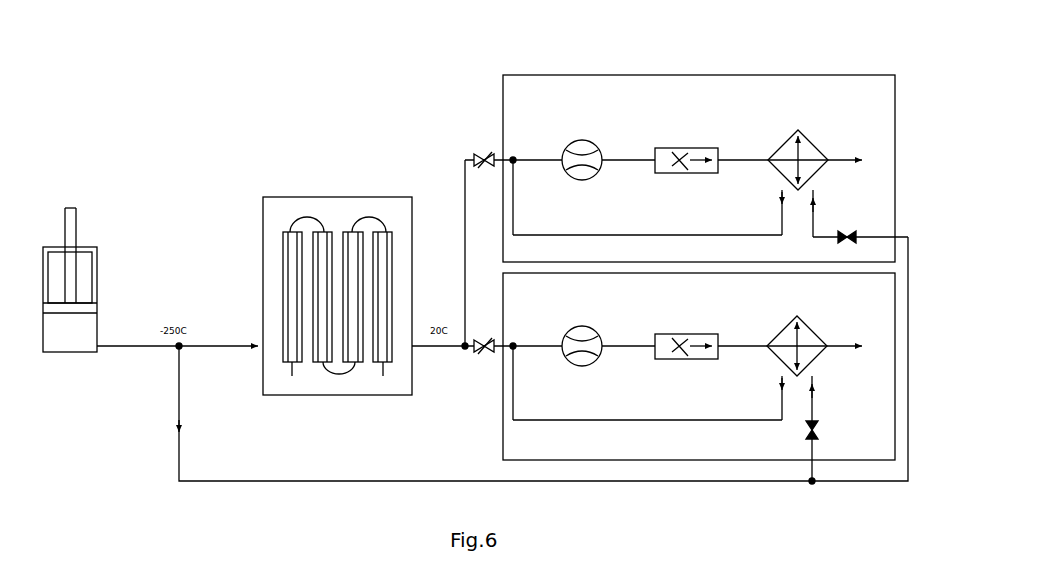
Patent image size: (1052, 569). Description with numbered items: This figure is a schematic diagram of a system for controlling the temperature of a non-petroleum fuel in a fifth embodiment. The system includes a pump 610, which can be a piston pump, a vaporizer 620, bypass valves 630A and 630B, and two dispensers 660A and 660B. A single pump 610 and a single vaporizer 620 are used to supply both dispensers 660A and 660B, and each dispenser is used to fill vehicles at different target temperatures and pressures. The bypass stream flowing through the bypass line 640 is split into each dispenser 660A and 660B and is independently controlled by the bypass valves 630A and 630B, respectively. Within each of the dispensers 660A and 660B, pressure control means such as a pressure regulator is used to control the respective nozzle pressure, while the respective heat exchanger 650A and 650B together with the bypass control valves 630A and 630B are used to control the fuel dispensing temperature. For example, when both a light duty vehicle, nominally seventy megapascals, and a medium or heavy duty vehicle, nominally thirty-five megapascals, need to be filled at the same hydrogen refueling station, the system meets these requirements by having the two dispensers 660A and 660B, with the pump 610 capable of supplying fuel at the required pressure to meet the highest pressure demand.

The pump 610 is at (82, 247).
The vaporizer 620 is at (290, 197).
The bypass valve 630A is at (860, 235).
The bypass valve 630B is at (818, 441).
The bypass line 640 is at (323, 487).
The heat exchanger 650A is at (778, 148).
The heat exchanger 650B is at (778, 334).
The dispenser 660A is at (729, 140).
The dispenser 660B is at (703, 396).